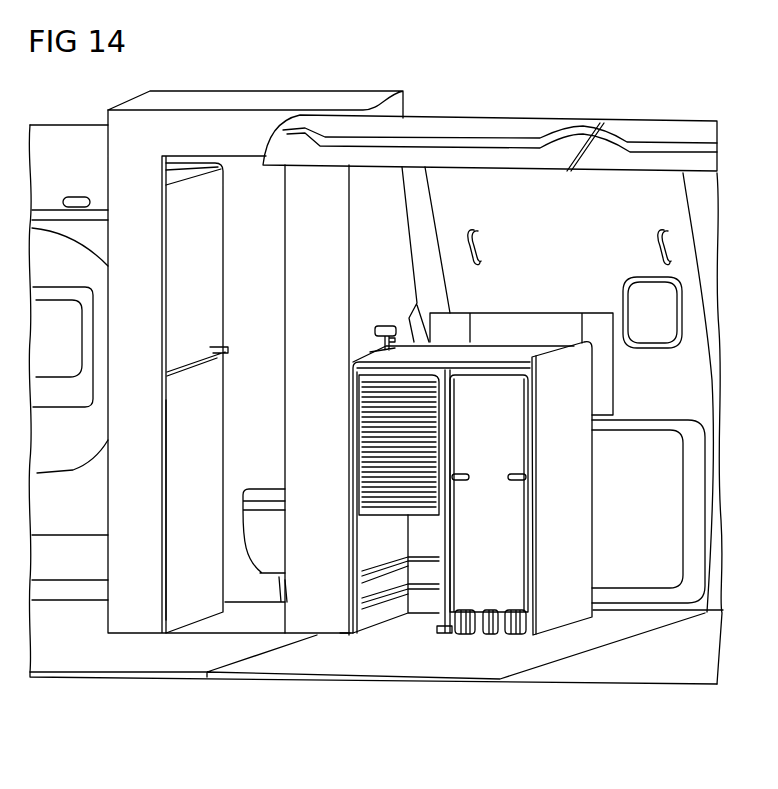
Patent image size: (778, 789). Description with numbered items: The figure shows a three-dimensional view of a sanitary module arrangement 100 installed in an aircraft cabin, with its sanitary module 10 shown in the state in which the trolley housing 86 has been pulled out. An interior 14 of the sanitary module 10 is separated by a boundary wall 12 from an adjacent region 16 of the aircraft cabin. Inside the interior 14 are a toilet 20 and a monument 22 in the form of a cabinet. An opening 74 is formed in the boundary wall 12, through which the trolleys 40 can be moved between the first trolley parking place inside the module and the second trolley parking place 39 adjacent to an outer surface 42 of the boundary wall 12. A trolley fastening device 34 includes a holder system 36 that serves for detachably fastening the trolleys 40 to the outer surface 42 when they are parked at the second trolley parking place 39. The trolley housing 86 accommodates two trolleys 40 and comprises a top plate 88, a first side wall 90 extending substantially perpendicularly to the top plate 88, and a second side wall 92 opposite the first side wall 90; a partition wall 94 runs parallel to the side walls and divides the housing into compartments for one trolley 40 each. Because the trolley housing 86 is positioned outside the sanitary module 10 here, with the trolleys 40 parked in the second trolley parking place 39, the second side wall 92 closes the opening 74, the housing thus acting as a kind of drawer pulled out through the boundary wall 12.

The sanitary module 10 is at (373, 97).
The sanitary module arrangement 100 is at (643, 116).
The outer surface 42 is at (380, 190).
The boundary wall 12 is at (382, 226).
The interior 14 is at (267, 247).
The monument 22 is at (192, 218).
The second side wall 92 is at (178, 400).
The trolley housing 86 is at (188, 472).
The toilet 20 is at (253, 535).
The opening 74 is at (350, 540).
The partition wall 94 is at (435, 613).
The trolleys 40 is at (502, 588).
The holder system 36 is at (474, 329).
The trolley fastening device 34 is at (476, 289).
The top plate 88 is at (533, 357).
The first side wall 90 is at (582, 513).
The region 16 is at (693, 382).
The second trolley parking place 39 is at (364, 652).